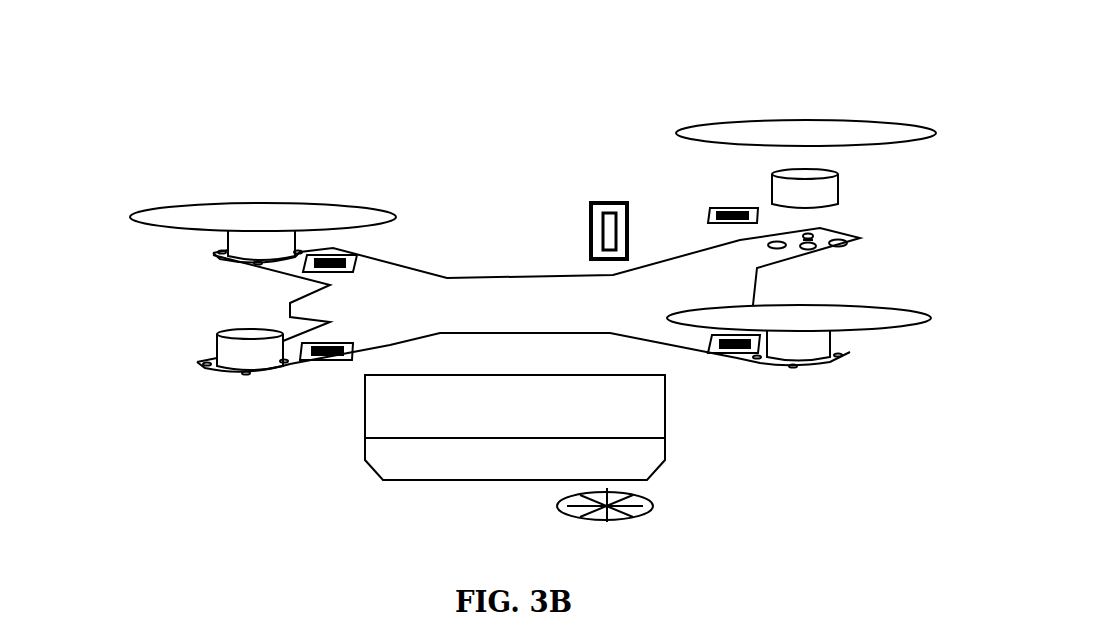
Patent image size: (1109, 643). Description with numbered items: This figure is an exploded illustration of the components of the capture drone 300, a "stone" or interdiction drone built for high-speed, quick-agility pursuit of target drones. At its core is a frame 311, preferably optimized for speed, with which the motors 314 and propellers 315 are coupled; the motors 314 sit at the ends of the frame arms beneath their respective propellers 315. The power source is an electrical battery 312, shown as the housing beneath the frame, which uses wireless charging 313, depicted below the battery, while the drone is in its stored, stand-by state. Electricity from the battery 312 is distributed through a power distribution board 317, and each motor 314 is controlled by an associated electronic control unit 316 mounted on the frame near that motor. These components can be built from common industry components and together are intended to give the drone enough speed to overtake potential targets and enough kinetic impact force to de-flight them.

The capture drone 300 is at (688, 72).
The frame 311 is at (455, 270).
The batteries 312 is at (400, 410).
The wireless charging 313 is at (640, 505).
The motors 314 is at (247, 245).
The propellers 315 is at (300, 215).
The electronic control unit 316 is at (365, 252).
The power distribution board 317 is at (615, 203).